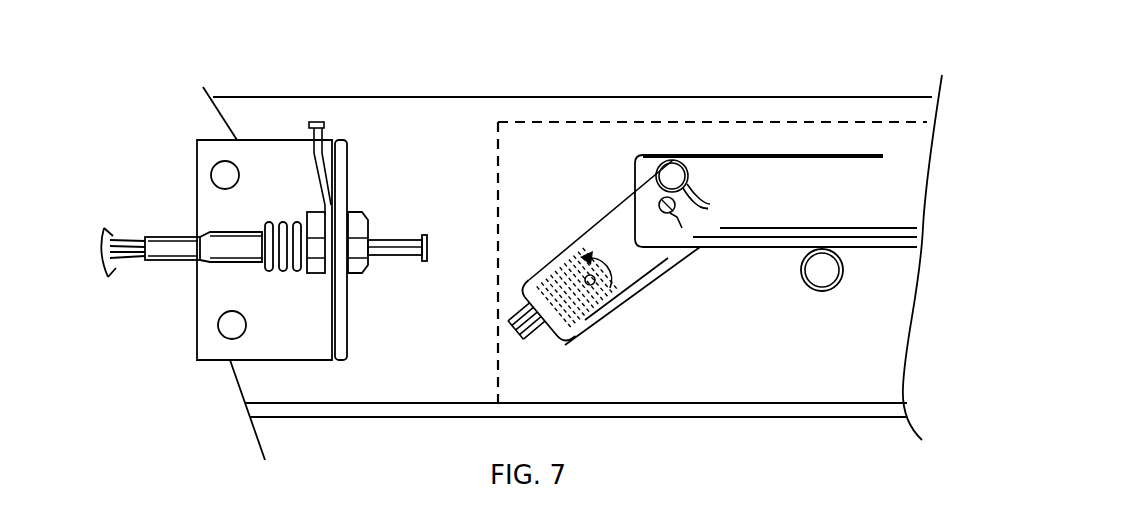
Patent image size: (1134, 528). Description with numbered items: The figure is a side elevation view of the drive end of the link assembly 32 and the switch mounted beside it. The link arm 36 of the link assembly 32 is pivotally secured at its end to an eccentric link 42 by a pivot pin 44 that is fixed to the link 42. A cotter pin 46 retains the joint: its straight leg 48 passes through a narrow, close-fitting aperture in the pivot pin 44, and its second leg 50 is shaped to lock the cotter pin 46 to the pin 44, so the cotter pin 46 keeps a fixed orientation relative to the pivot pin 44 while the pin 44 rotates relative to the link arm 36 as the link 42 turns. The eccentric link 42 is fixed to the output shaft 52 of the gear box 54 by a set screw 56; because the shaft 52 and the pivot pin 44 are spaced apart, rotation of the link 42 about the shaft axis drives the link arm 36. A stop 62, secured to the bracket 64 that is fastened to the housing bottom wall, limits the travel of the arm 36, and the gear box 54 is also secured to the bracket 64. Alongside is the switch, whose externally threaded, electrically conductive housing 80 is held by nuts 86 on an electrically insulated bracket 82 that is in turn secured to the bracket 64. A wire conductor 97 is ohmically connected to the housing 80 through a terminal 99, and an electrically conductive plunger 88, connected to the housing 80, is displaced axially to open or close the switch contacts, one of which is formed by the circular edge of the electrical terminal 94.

The link assembly 32 is at (724, 259).
The link arm 36 is at (863, 177).
The eccentric link 42 is at (607, 307).
The pivot pin 44 is at (659, 205).
The cotter pin 46 is at (676, 157).
The leg 48 is at (680, 228).
The second leg 50 is at (707, 210).
The output shaft 52 is at (587, 272).
The gear box 54 is at (590, 122).
The set screw 56 is at (512, 336).
The stop 62 is at (830, 292).
The bracket 64 is at (678, 98).
The housing 80 is at (302, 213).
The bracket 82 is at (348, 170).
The nuts 86 is at (357, 213).
The plunger 88 is at (394, 257).
The electrical terminal 94 is at (228, 246).
The wire conductor 97 is at (316, 130).
The terminal 99 is at (328, 157).